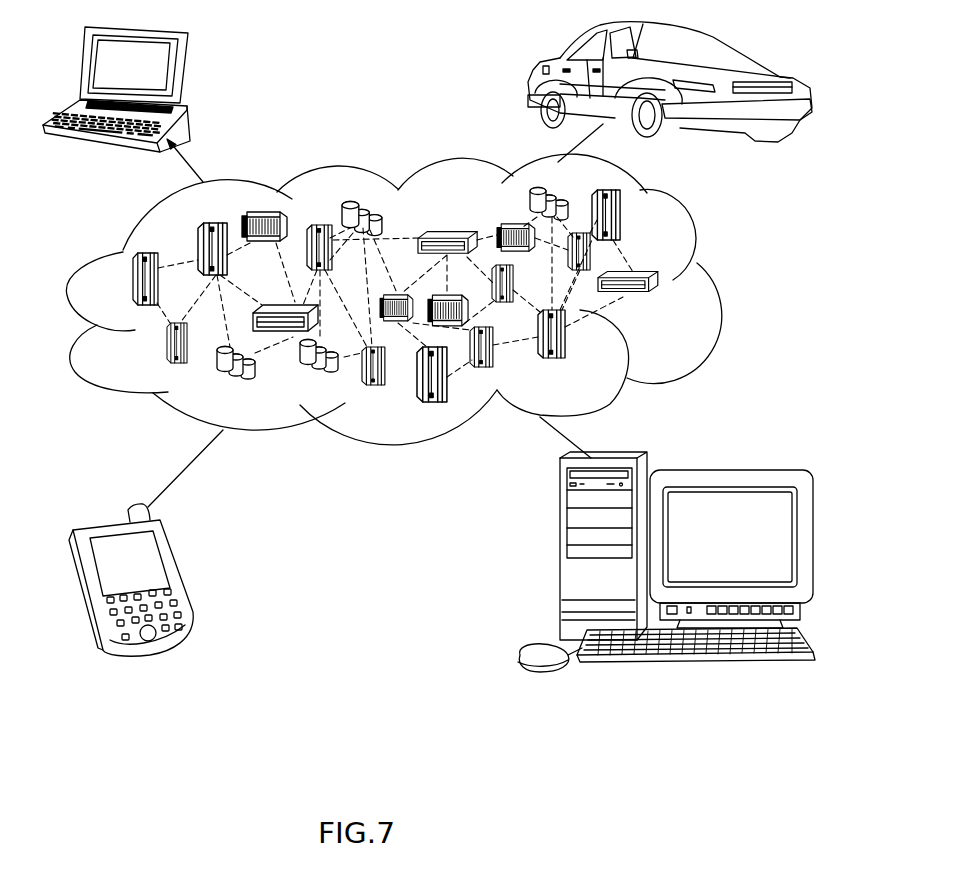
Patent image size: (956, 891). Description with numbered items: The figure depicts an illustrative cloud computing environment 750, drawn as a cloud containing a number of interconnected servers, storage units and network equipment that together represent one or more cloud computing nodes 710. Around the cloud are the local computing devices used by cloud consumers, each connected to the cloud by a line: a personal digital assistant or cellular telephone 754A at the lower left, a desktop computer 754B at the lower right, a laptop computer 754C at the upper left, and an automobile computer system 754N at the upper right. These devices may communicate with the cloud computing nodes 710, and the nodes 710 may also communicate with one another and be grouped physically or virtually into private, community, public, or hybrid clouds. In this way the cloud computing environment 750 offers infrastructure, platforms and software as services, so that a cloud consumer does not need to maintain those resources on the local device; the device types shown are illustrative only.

The cloud computing environment 750 is at (698, 233).
The cloud computing nodes 710 is at (680, 302).
The personal digital assistant (PDA) or cellular telephone 754A is at (175, 572).
The desktop computer 754B is at (558, 553).
The laptop computer 754C is at (186, 70).
The automobile computer system 754N is at (535, 72).